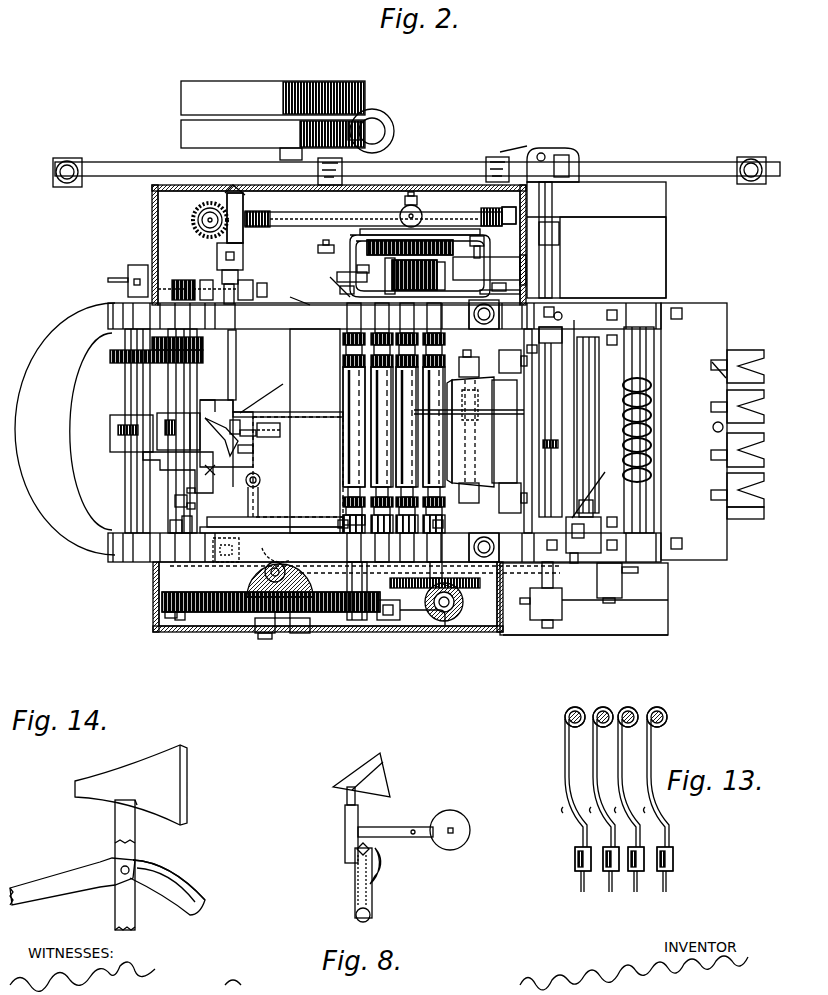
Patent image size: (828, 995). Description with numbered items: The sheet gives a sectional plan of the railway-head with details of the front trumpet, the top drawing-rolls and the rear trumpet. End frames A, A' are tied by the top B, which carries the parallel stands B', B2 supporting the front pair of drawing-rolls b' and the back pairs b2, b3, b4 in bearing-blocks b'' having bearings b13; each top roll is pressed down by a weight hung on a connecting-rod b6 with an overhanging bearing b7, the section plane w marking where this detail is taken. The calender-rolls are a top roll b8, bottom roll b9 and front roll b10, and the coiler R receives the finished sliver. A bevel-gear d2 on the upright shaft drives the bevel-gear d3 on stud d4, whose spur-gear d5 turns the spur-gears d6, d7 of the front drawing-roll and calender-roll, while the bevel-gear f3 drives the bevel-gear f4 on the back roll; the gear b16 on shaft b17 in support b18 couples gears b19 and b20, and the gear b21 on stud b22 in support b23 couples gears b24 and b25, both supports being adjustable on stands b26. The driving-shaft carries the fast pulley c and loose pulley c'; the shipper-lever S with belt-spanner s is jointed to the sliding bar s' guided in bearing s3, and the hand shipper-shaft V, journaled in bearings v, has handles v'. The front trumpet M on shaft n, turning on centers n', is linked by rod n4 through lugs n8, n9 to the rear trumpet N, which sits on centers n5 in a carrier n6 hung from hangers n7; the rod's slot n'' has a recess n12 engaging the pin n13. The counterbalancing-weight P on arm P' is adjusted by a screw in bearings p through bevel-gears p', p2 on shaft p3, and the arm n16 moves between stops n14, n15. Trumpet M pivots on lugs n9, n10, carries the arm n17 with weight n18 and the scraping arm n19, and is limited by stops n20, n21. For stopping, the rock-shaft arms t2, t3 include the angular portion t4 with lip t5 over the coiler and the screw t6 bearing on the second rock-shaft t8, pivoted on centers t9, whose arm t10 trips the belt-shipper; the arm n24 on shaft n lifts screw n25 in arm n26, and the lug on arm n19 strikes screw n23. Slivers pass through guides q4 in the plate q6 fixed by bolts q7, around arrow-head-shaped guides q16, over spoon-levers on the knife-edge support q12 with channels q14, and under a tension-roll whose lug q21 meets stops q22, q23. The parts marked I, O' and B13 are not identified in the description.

In FIG. 2, the fast pulley c is at (273, 98).
In FIG. 2, the loose pulley c' is at (273, 140).
In FIG. 2, the belt-spanner s is at (373, 120).
In FIG. 2, the shipper-shaft V is at (126, 172).
In FIG. 2, the handles v' is at (409, 158).
In FIG. 2, the bearings v is at (394, 153).
In FIG. 2, the shipper-lever S is at (533, 150).
In FIG. 2, the bar s' is at (553, 240).
In FIG. 2, the end frame or standard A is at (596, 240).
In FIG. 2, the bearing s3 is at (560, 236).
In FIG. 2, the frame section I is at (613, 257).
In FIG. 2, the arm P' is at (373, 209).
In FIG. 2, the counterbalancing-weight P is at (474, 208).
In FIG. 2, the wheel O' is at (443, 208).
In FIG. 2, the bearings p is at (371, 221).
In FIG. 2, the bevel-gear p2 is at (208, 221).
In FIG. 2, the shaft p3 is at (194, 228).
In FIG. 2, the centers n' is at (204, 373).
In FIG. 2, the bevel-gear p' is at (244, 218).
In FIG. 2, the stop n14 is at (205, 267).
In FIG. 2, the stop n15 is at (257, 292).
In FIG. 2, the upwardly-extending arm n16 is at (229, 286).
In FIG. 2, the gear b16 is at (394, 240).
In FIG. 2, the support b18 is at (361, 230).
In FIG. 2, the stud b22 is at (428, 290).
In FIG. 2, the gear b25 is at (506, 266).
In FIG. 2, the gear b20 is at (486, 240).
In FIG. 2, the support b23 is at (480, 291).
In FIG. 2, the gear b19 is at (375, 250).
In FIG. 2, the shaft b17 is at (360, 266).
In FIG. 2, the gear b24 is at (380, 272).
In FIG. 2, the gear housing B13 is at (332, 290).
In FIG. 2, the gear b21 is at (340, 290).
In FIG. 2, the bearing-blocks b'' is at (384, 432).
In FIG. 2, the stands b26 is at (308, 287).
In FIG. 2, the stand B' is at (315, 429).
In FIG. 2, the coiler R is at (106, 429).
In FIG. 2, the upwardly-inclined lip t5 is at (148, 440).
In FIG. 2, the front calender-roll b10 is at (112, 430).
In FIG. 2, the top calender-roll b8 is at (178, 431).
In FIG. 2, the bottom calender-roll b9 is at (222, 410).
In FIG. 2, the shaft n is at (240, 408).
In FIG. 8, the shaft n is at (347, 903).
In FIG. 2, the trumpet M is at (249, 409).
In FIG. 14, the trumpet M is at (141, 779).
In FIG. 8, the trumpet M is at (374, 758).
In FIG. 2, the lug n8 is at (233, 395).
In FIG. 2, the lug n9 is at (248, 414).
In FIG. 2, the rod n4 is at (312, 410).
In FIG. 14, the rod n4 is at (38, 887).
In FIG. 2, the rearwardly-extending arm n17 is at (251, 426).
In FIG. 8, the rearwardly-extending arm n17 is at (400, 827).
In FIG. 2, the weight n18 is at (280, 432).
In FIG. 8, the weight n18 is at (462, 845).
In FIG. 2, the angular arm n19 is at (250, 450).
In FIG. 2, the plate or top B is at (298, 467).
In FIG. 2, the angular portion t4 is at (160, 478).
In FIG. 2, the adjusting-screw n23 is at (198, 492).
In FIG. 2, the arm t2 is at (206, 504).
In FIG. 2, the arm n24 is at (243, 478).
In FIG. 2, the screw n25 is at (262, 481).
In FIG. 2, the arm n26 is at (256, 519).
In FIG. 2, the stand B2 is at (271, 514).
In FIG. 2, the section plane w is at (380, 518).
In FIG. 2, the overhanging bearing b7 is at (348, 528).
In FIG. 13, the overhanging bearing b7 is at (565, 716).
In FIG. 2, the front pair of drawing-rolls b' is at (354, 432).
In FIG. 2, the back pair of drawing-rolls b2 is at (266, 548).
In FIG. 2, the back pair of drawing-rolls b3 is at (233, 584).
In FIG. 2, the back pair of drawing-rolls b4 is at (434, 432).
In FIG. 2, the bearings b13 is at (432, 315).
In FIG. 2, the rear trumpet N is at (488, 397).
In FIG. 2, the pin or stud n13 is at (473, 418).
In FIG. 14, the pin or stud n13 is at (118, 866).
In FIG. 2, the carrier n6 is at (504, 431).
In FIG. 2, the centers n5 is at (467, 358).
In FIG. 2, the hangers n7 is at (504, 343).
In FIG. 2, the adjusting-screw t6 is at (542, 347).
In FIG. 2, the arm t3 is at (547, 478).
In FIG. 2, the second rock-shaft t8 is at (558, 422).
In FIG. 2, the rearwardly-extending arm t10 is at (581, 425).
In FIG. 2, the centers t9 is at (562, 316).
In FIG. 2, the lug q21 is at (572, 517).
In FIG. 2, the stop q23 is at (598, 487).
In FIG. 2, the channels q14 is at (628, 386).
In FIG. 2, the knife-edge support q12 is at (650, 345).
In FIG. 2, the bolts q7 is at (683, 313).
In FIG. 2, the guides q4 is at (760, 362).
In FIG. 2, the arrow-head-shaped guides q16 is at (726, 478).
In FIG. 2, the plate q6 is at (703, 363).
In FIG. 2, the spur-gear d5 is at (237, 613).
In FIG. 2, the spur-gear d7 is at (170, 613).
In FIG. 2, the bevel-gear d2 is at (290, 568).
In FIG. 2, the bevel-gear d3 is at (303, 590).
In FIG. 2, the supporting-stud d4 is at (279, 613).
In FIG. 2, the spur-gear d6 is at (352, 607).
In FIG. 2, the bevel-gear f4 is at (464, 598).
In FIG. 2, the bevel-gear f3 is at (447, 614).
In FIG. 2, the end frame or standard A' is at (584, 598).
In FIG. 2, the stop q22 is at (577, 557).
In FIG. 14, the recess n12 is at (135, 872).
In FIG. 14, the slot n'' is at (180, 888).
In FIG. 8, the lug n10 is at (357, 847).
In FIG. 8, the stop n21 is at (352, 867).
In FIG. 8, the stop n20 is at (393, 872).
In FIG. 13, the connecting-rod b6 is at (582, 836).